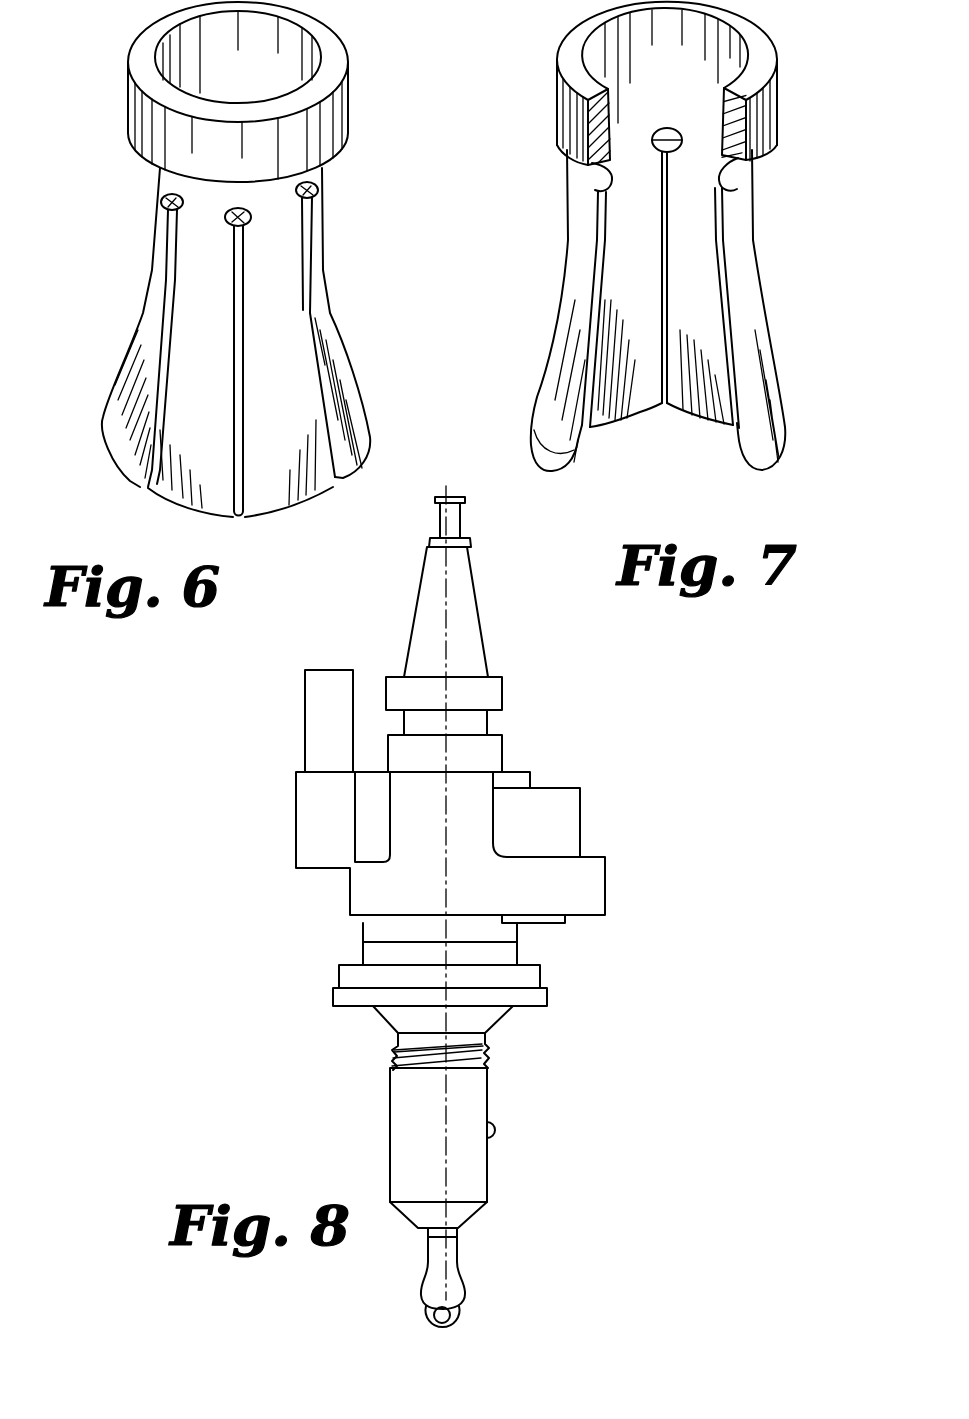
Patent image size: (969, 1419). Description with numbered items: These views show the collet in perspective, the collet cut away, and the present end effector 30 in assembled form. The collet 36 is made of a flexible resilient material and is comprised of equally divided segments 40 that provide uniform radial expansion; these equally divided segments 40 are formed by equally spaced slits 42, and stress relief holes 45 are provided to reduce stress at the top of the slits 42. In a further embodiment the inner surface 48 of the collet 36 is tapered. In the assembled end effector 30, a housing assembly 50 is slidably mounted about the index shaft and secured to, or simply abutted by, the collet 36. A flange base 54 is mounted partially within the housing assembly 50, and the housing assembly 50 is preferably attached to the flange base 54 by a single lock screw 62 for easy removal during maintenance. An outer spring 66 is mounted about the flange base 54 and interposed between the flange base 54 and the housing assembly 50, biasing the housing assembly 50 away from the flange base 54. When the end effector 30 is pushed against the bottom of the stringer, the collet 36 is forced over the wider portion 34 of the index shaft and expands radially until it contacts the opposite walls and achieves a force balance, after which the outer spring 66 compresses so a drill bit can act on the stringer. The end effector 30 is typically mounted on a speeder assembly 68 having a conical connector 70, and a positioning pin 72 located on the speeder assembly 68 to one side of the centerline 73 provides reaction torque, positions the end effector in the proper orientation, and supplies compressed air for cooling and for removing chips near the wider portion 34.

In FIG. 8, the end effector 30 is at (262, 861).
In FIG. 8, the wider portion 34 is at (465, 1316).
In FIG. 6, the collet 36 is at (132, 306).
In FIG. 7, the collet 36 is at (790, 310).
In FIG. 8, the collet 36 is at (470, 1288).
In FIG. 6, the equally divided segments 40 is at (284, 517).
In FIG. 7, the equally divided segments 40 is at (548, 446).
In FIG. 6, the slits 42 is at (314, 318).
In FIG. 7, the slits 42 is at (665, 240).
In FIG. 6, the stress relief holes 45 is at (322, 192).
In FIG. 7, the stress relief holes 45 is at (760, 172).
In FIG. 7, the inner surface 48 is at (588, 444).
In FIG. 8, the housing assembly 50 is at (497, 1190).
In FIG. 8, the flange base 54 is at (512, 1020).
In FIG. 8, the lock screw 62 is at (505, 1130).
In FIG. 8, the outer spring 66 is at (480, 1055).
In FIG. 8, the speeder assembly 68 is at (642, 870).
In FIG. 8, the conical connector 70 is at (488, 628).
In FIG. 8, the positioning pin 72 is at (305, 716).
In FIG. 8, the centerline 73 is at (448, 487).